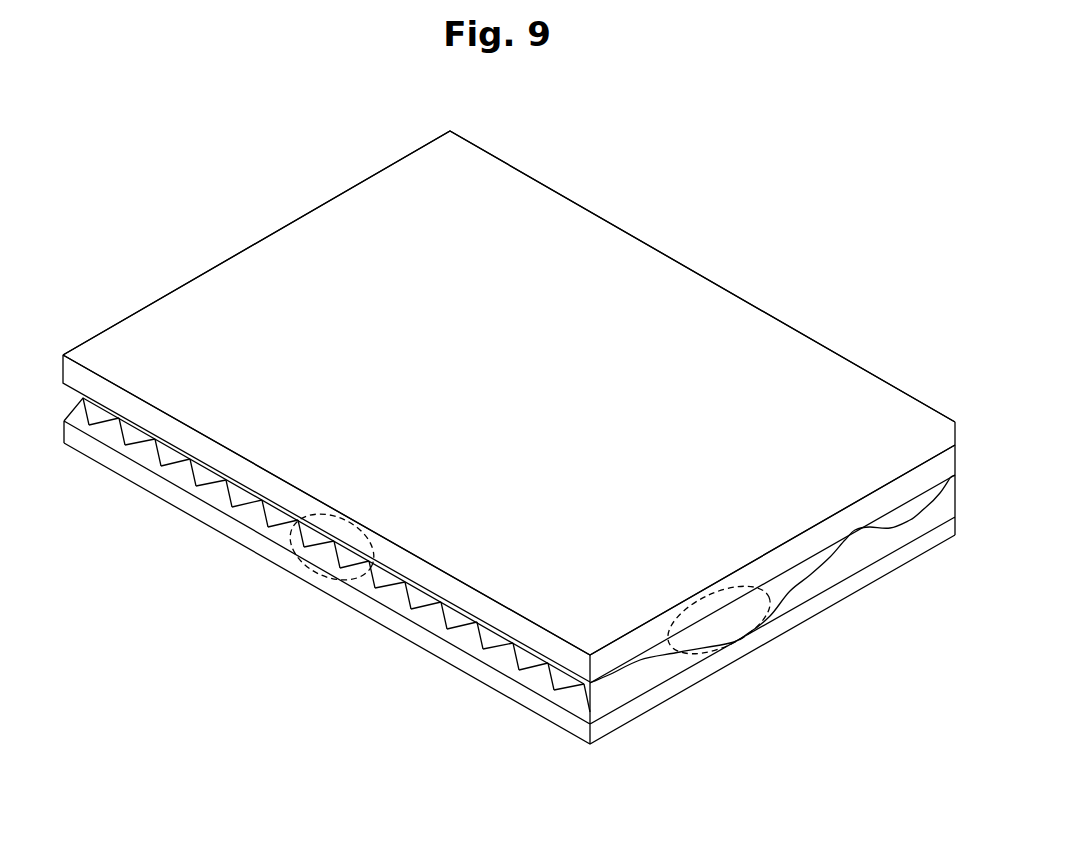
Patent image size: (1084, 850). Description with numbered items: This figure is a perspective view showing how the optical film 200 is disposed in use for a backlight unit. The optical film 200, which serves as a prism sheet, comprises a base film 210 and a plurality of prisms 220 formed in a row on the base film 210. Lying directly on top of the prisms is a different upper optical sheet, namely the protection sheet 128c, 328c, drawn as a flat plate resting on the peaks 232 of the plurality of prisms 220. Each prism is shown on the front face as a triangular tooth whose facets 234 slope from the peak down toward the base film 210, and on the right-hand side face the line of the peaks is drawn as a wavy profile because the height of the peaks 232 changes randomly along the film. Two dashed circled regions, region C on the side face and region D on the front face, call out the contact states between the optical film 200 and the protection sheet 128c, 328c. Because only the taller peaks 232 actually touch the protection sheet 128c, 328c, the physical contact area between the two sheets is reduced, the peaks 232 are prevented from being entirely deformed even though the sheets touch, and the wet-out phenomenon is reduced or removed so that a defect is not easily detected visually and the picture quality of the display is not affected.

The protection sheet 128c is at (570, 213).
The protection sheet 328c is at (509, 393).
The optical film 200 is at (509, 593).
The base film 210 is at (373, 608).
The plurality of prisms 220 is at (490, 678).
The peaks 232 is at (299, 520).
The prism facet 234 is at (238, 513).
The region C is at (727, 648).
The region D is at (328, 585).